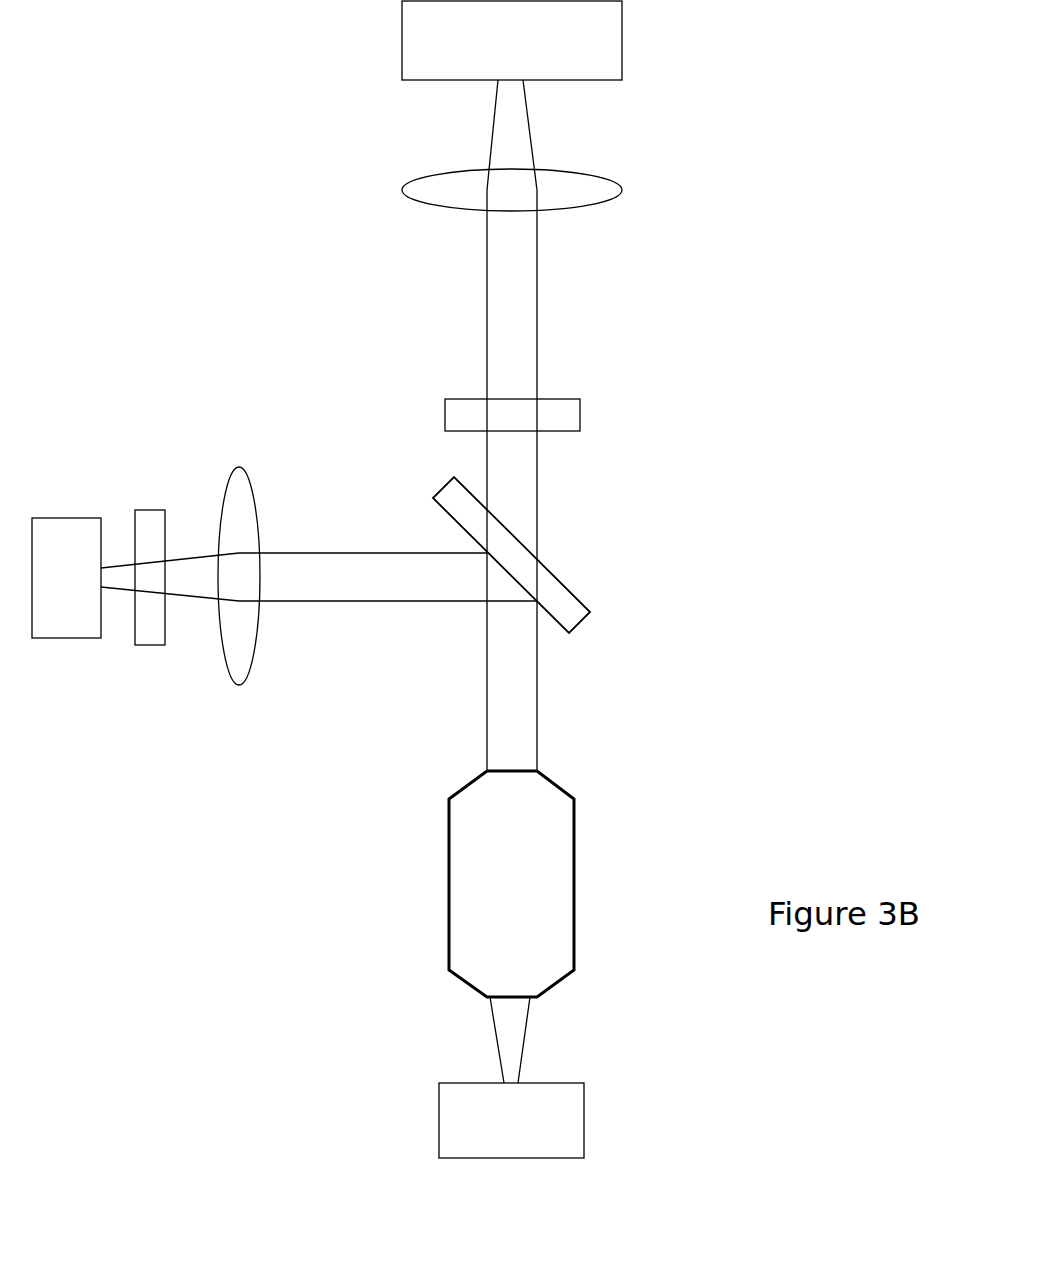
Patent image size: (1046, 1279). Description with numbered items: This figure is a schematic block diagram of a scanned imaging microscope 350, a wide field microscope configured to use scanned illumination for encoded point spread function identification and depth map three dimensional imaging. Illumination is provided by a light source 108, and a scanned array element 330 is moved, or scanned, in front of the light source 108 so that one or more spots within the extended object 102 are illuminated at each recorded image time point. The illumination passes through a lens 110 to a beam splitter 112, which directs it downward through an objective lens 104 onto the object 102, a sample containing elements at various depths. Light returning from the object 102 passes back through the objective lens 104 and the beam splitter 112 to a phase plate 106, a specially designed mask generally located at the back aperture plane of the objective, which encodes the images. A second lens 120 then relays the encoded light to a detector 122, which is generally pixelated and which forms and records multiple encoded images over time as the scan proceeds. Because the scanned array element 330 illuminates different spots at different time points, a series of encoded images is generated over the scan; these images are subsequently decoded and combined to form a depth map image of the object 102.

The scanned imaging microscope 350 is at (281, 845).
The detector 122 is at (512, 40).
The lens 120 is at (530, 180).
The phase plate 106 is at (500, 409).
The beam splitter 112 is at (538, 555).
The lens 110 is at (245, 552).
The scanned array element 330 is at (146, 591).
The light source 108 is at (53, 545).
The objective lens 104 is at (511, 884).
The object 102 is at (511, 1120).